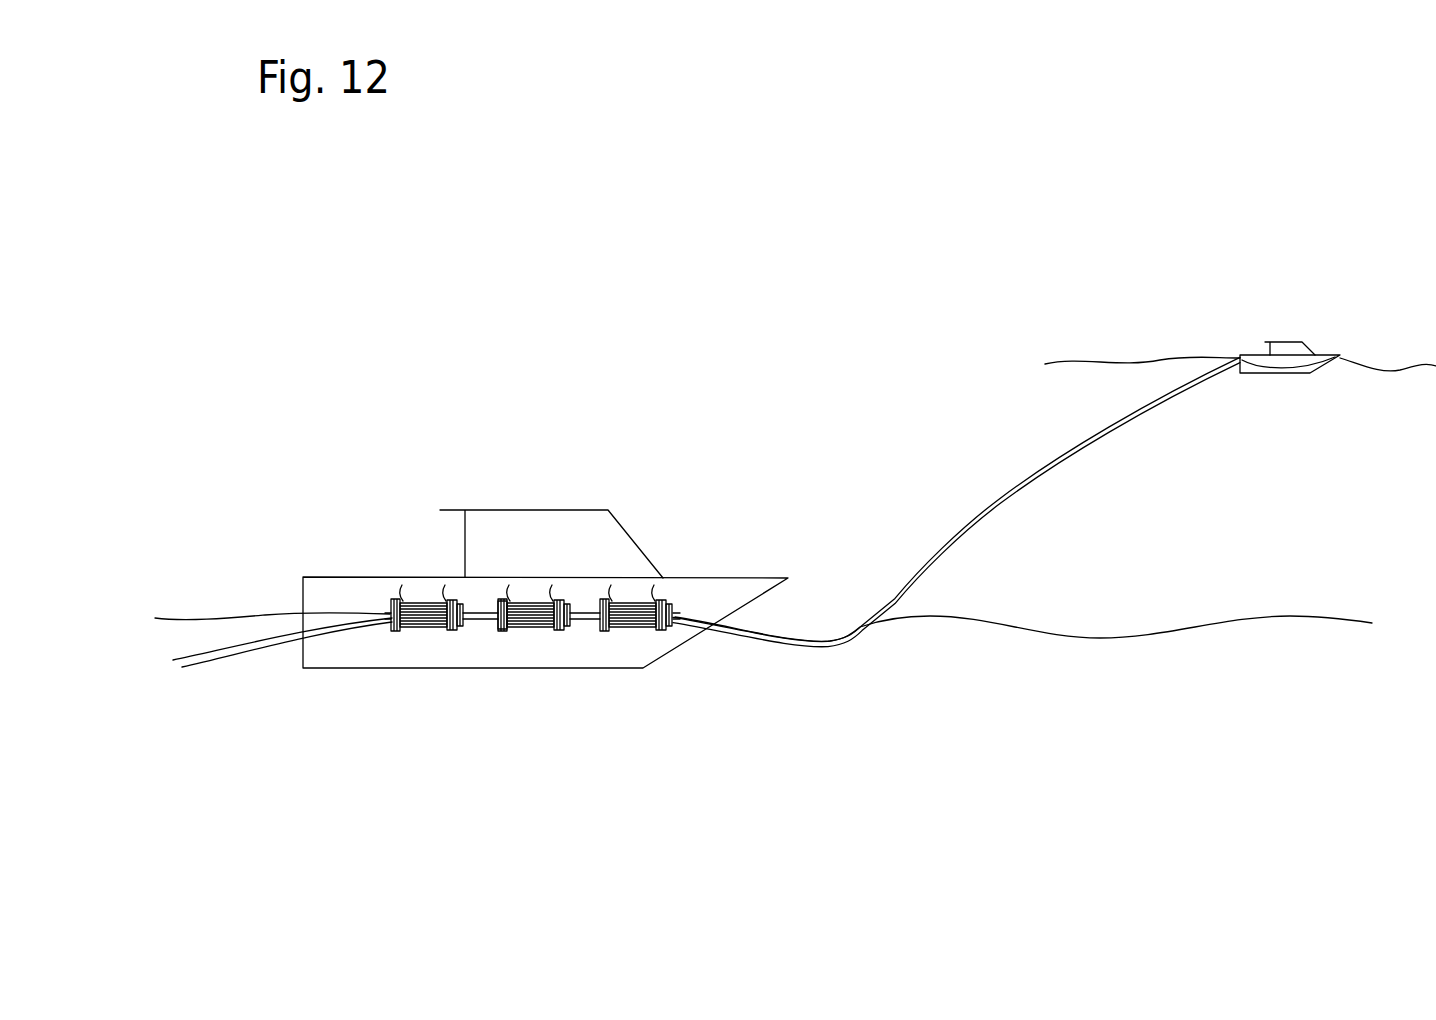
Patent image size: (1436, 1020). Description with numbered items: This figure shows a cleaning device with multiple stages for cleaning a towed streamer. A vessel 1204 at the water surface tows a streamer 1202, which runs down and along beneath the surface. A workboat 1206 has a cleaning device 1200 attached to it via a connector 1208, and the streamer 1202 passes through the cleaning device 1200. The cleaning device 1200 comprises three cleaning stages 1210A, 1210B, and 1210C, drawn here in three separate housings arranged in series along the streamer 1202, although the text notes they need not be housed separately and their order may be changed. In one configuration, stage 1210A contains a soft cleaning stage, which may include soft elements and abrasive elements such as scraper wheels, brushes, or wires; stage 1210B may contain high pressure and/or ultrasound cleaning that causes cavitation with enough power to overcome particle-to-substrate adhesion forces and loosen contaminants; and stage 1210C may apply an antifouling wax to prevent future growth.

The cleaning device 1200 is at (668, 633).
The streamer 1202 is at (937, 560).
The vessel 1204 is at (1257, 353).
The workboat 1206 is at (540, 510).
The connector 1208 is at (513, 600).
The cleaning stage 1210A is at (662, 603).
The cleaning stage 1210B is at (562, 600).
The cleaning stage 1210C is at (423, 602).